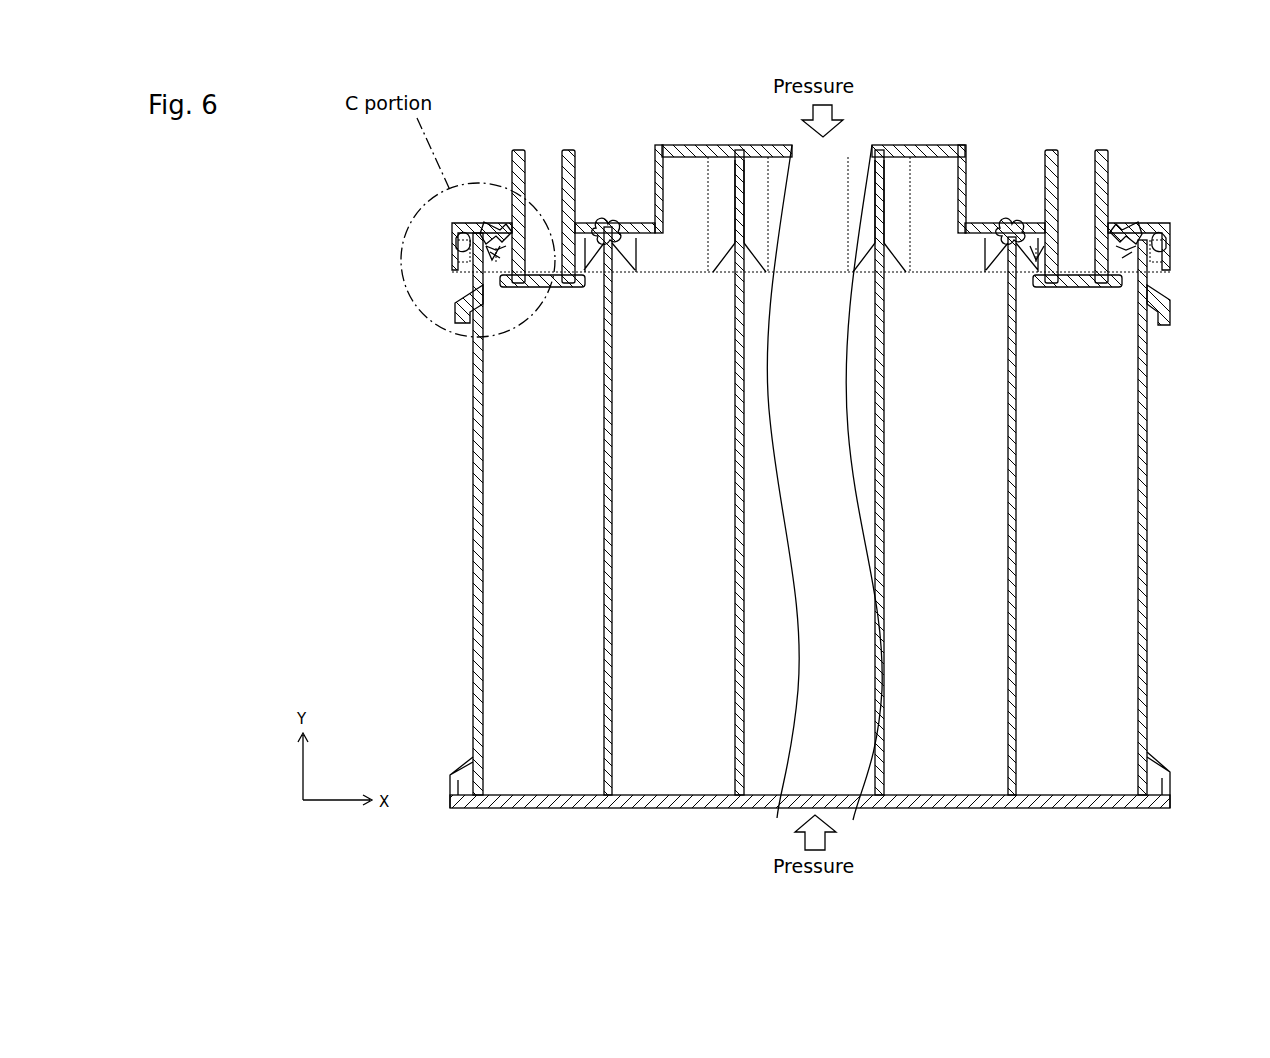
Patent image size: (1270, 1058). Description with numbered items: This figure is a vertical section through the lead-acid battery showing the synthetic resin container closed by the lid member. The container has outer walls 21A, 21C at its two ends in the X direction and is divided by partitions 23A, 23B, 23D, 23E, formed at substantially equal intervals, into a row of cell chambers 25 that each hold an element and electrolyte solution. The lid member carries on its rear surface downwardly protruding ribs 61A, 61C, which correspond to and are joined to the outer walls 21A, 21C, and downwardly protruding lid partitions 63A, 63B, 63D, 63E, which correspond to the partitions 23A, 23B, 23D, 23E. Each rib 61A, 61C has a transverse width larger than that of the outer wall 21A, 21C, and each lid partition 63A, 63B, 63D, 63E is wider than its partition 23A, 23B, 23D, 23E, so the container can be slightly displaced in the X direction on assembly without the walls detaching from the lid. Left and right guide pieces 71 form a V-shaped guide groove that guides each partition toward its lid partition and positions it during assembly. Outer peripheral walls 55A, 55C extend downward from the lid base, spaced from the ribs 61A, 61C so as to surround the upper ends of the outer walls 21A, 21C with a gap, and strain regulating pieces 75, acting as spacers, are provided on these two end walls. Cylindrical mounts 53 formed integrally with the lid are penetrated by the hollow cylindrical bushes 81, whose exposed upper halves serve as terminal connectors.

The outer wall 21A is at (473, 452).
The outer wall 21C is at (1147, 472).
The partition 23A is at (612, 448).
The partition 23B is at (744, 448).
The partition 23D is at (884, 520).
The partition 23E is at (1016, 460).
The cell chamber 25 is at (552, 660).
The cylindrical mount 53 is at (488, 266).
The outer peripheral wall 55A is at (452, 255).
The outer peripheral wall 55C is at (1168, 255).
The rib 61A is at (478, 232).
The rib 61C is at (1138, 236).
The lid partition 63A is at (608, 232).
The lid partition 63B is at (737, 192).
The lid partition 63D is at (883, 192).
The lid partition 63E is at (1012, 236).
The guide piece 71 is at (622, 256).
The strain regulating piece 75 is at (455, 247).
The bush 81 is at (566, 165).